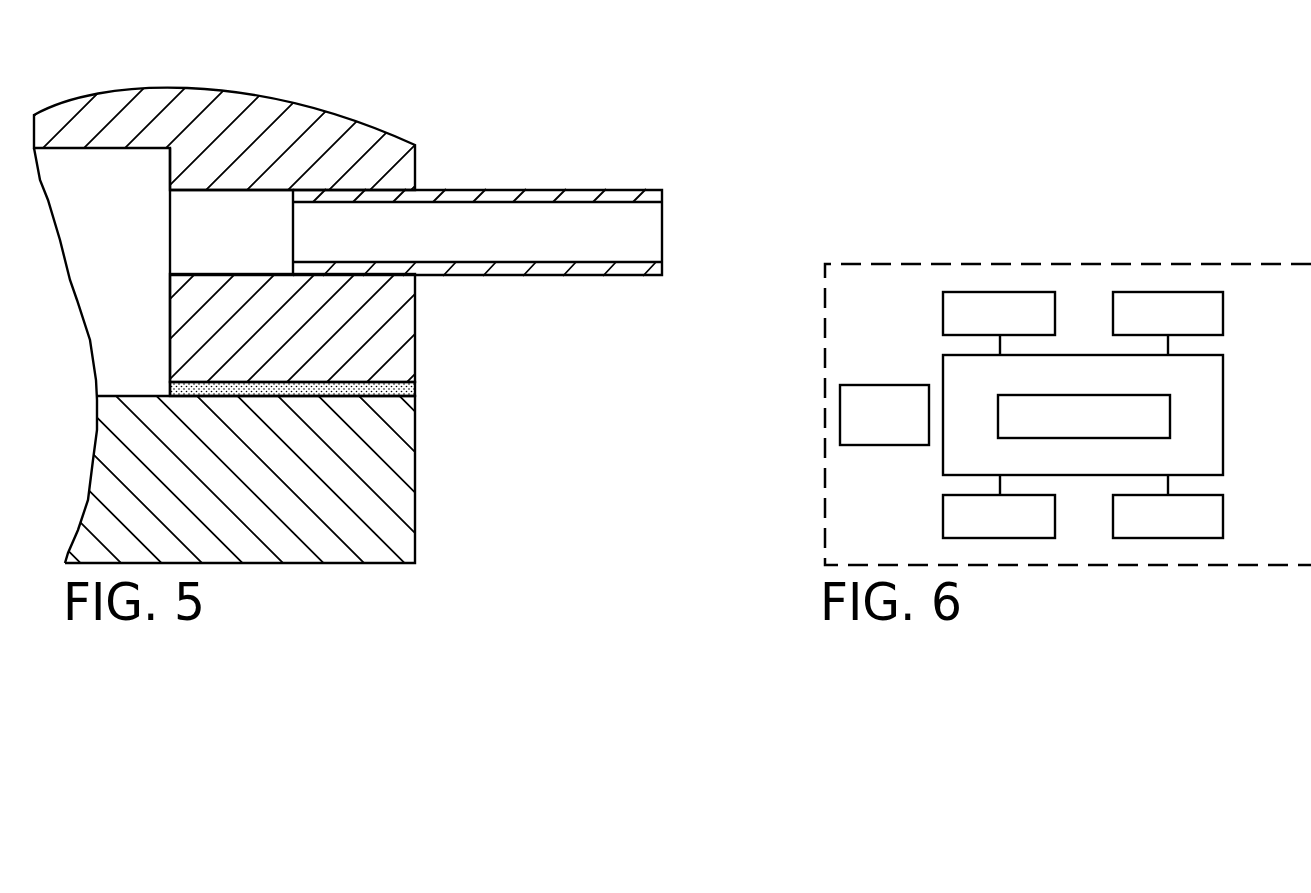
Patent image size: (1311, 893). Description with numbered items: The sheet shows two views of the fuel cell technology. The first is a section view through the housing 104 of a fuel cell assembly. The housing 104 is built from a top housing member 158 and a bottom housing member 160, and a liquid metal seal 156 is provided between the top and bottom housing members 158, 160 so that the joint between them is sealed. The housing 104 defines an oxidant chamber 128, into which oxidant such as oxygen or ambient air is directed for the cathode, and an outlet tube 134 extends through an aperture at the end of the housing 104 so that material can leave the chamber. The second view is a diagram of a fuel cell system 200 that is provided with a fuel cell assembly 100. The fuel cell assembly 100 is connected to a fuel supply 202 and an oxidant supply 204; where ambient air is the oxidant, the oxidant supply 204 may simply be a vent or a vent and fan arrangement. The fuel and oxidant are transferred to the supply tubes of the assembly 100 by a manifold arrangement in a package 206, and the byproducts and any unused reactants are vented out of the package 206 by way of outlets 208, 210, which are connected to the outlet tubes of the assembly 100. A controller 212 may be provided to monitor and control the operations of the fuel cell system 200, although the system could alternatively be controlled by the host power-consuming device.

In FIG. 5, the housing 104 is at (363, 67).
In FIG. 5, the oxidant chamber 128 is at (125, 193).
In FIG. 5, the outlet tube 134 is at (663, 219).
In FIG. 5, the liquid metal seal 156 is at (417, 390).
In FIG. 5, the top housing member 158 is at (187, 85).
In FIG. 5, the bottom housing member 160 is at (90, 478).
In FIG. 6, the fuel cell system 200 is at (781, 475).
In FIG. 6, the fuel supply 202 is at (973, 332).
In FIG. 6, the oxidant supply 204 is at (1142, 332).
In FIG. 6, the package 206 is at (1223, 398).
In FIG. 6, the outlet 208 is at (973, 532).
In FIG. 6, the outlet 210 is at (1142, 532).
In FIG. 6, the controller 212 is at (859, 430).
In FIG. 6, the fuel cell assembly 100 is at (1058, 430).